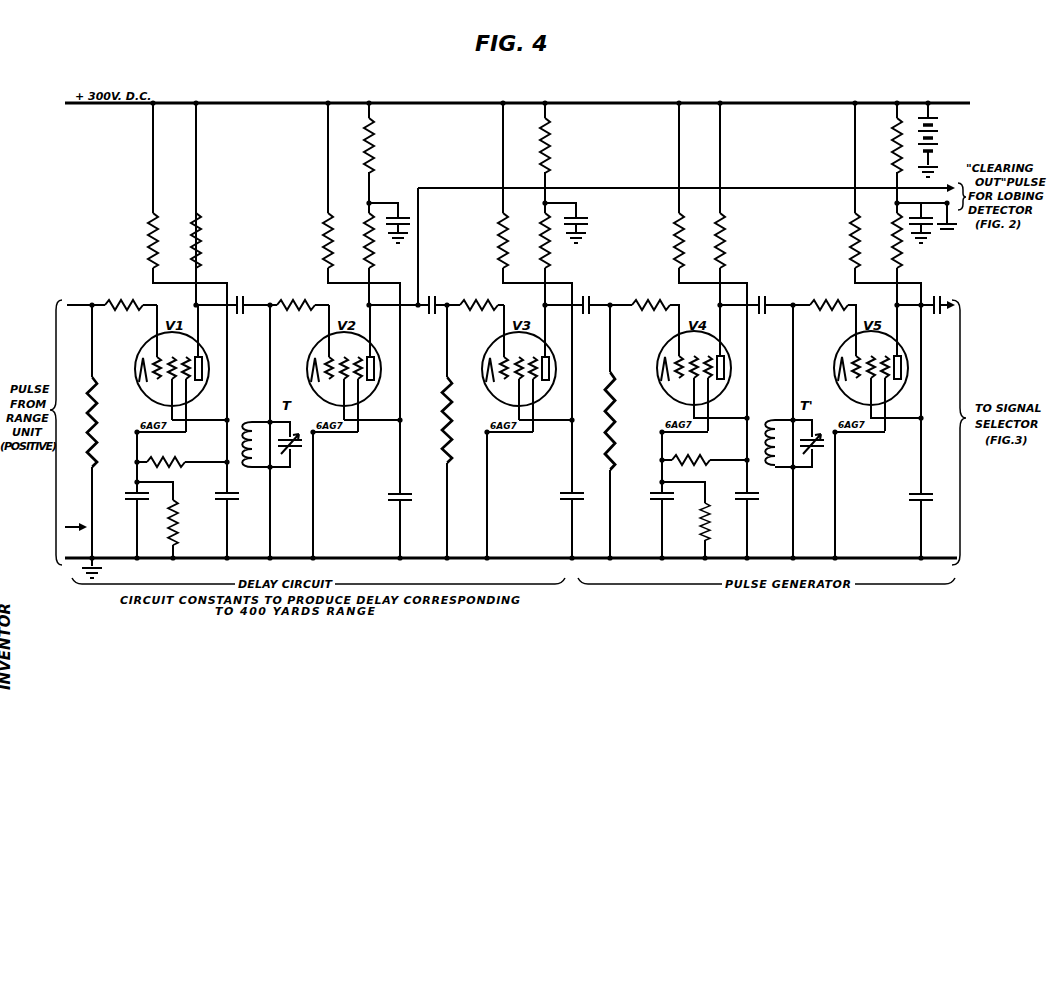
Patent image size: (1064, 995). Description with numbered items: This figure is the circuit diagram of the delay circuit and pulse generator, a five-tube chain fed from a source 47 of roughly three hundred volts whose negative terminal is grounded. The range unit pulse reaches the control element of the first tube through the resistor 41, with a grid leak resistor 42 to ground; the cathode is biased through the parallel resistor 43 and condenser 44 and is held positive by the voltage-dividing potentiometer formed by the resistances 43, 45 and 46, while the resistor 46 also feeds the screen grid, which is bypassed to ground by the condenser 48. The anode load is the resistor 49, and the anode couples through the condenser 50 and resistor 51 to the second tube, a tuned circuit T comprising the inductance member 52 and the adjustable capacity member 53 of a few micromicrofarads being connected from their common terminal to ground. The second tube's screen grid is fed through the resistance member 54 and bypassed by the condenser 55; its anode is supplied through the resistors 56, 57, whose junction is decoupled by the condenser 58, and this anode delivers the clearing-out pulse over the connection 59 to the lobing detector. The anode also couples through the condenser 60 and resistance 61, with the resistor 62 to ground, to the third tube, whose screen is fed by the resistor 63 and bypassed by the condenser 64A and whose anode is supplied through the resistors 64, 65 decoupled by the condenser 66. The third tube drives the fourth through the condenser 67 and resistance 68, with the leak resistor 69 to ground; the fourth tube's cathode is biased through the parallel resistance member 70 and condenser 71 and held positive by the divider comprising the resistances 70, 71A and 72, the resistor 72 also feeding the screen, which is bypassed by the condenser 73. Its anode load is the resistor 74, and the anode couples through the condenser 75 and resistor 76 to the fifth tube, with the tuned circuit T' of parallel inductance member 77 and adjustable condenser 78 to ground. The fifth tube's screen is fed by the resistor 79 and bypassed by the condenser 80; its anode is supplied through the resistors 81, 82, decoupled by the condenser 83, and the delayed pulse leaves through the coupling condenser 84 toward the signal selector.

The resistor 41 is at (129, 311).
The grid leak resistor 42 is at (99, 440).
The resistor 43 is at (179, 507).
The condenser 44 is at (124, 496).
The resistance 45 is at (178, 464).
The resistor 46 is at (159, 232).
The source 47 is at (937, 138).
The condenser 48 is at (215, 496).
The resistor 49 is at (201, 232).
The condenser 50 is at (239, 314).
The resistor 51 is at (294, 311).
The inductance member 52 is at (241, 434).
The adjustable capacity member 53 is at (300, 454).
The resistance member 54 is at (334, 232).
The condenser 55 is at (388, 497).
The resistor 56 is at (375, 247).
The resistor 57 is at (375, 160).
The condenser 58 is at (407, 212).
The connection 59 is at (757, 190).
The condenser 60 is at (430, 314).
The resistance 61 is at (488, 311).
The resistor 62 is at (452, 430).
The resistor 63 is at (509, 232).
The resistor 64 is at (551, 247).
The condenser 64A is at (585, 498).
The resistor 65 is at (551, 160).
The condenser 66 is at (589, 214).
The condenser 67 is at (586, 314).
The resistance 68 is at (660, 311).
The leak resistor 69 is at (616, 430).
The resistance member 70 is at (710, 513).
The condenser 71 is at (650, 495).
The resistance 71A is at (700, 463).
The resistor 72 is at (685, 232).
The condenser 73 is at (735, 496).
The resistor 74 is at (725, 232).
The condenser 75 is at (760, 314).
The resistor 76 is at (835, 311).
The inductance member 77 is at (764, 432).
The adjustable condenser 78 is at (823, 454).
The resistor 79 is at (858, 232).
The condenser 80 is at (930, 495).
The resistor 81 is at (901, 247).
The resistor 82 is at (895, 122).
The condenser 83 is at (928, 226).
The coupling condenser 84 is at (932, 314).